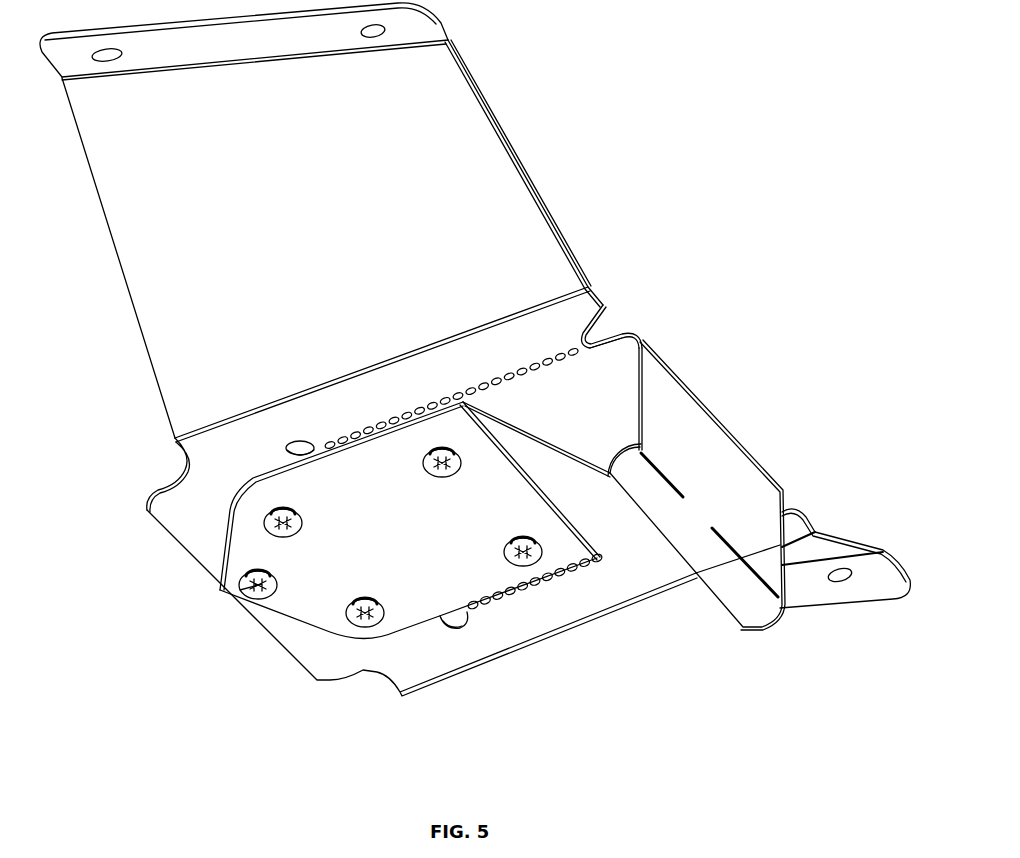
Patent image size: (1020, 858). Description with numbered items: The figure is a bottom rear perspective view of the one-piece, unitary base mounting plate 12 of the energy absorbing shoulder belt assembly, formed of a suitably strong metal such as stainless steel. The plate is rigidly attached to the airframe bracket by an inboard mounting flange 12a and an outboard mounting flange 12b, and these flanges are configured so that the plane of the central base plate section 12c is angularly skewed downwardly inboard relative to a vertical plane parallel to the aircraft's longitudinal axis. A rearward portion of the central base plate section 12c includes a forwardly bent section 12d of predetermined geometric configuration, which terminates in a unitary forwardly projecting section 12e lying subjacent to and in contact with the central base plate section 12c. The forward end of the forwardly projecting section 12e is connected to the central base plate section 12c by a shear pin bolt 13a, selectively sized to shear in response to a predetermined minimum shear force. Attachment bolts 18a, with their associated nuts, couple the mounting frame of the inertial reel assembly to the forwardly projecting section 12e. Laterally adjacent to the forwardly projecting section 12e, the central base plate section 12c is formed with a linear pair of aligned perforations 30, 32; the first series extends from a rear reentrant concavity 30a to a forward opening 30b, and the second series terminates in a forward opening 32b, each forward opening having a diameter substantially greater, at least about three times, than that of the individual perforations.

The base mounting plate 12 is at (475, 379).
The inboard mounting flange 12a is at (285, 194).
The outboard mounting flange 12b is at (845, 548).
The central base plate section 12c is at (566, 420).
The forwardly bent section 12d is at (678, 521).
The forwardly projecting section 12e is at (355, 504).
The shear pin bolt 13a is at (240, 590).
The attachment bolts 18a is at (295, 532).
The perforations 30 is at (496, 366).
The rear reentrant concavity 30a is at (590, 346).
The forward opening 30b is at (300, 440).
The perforations 32 is at (511, 612).
The forward opening 32b is at (455, 628).